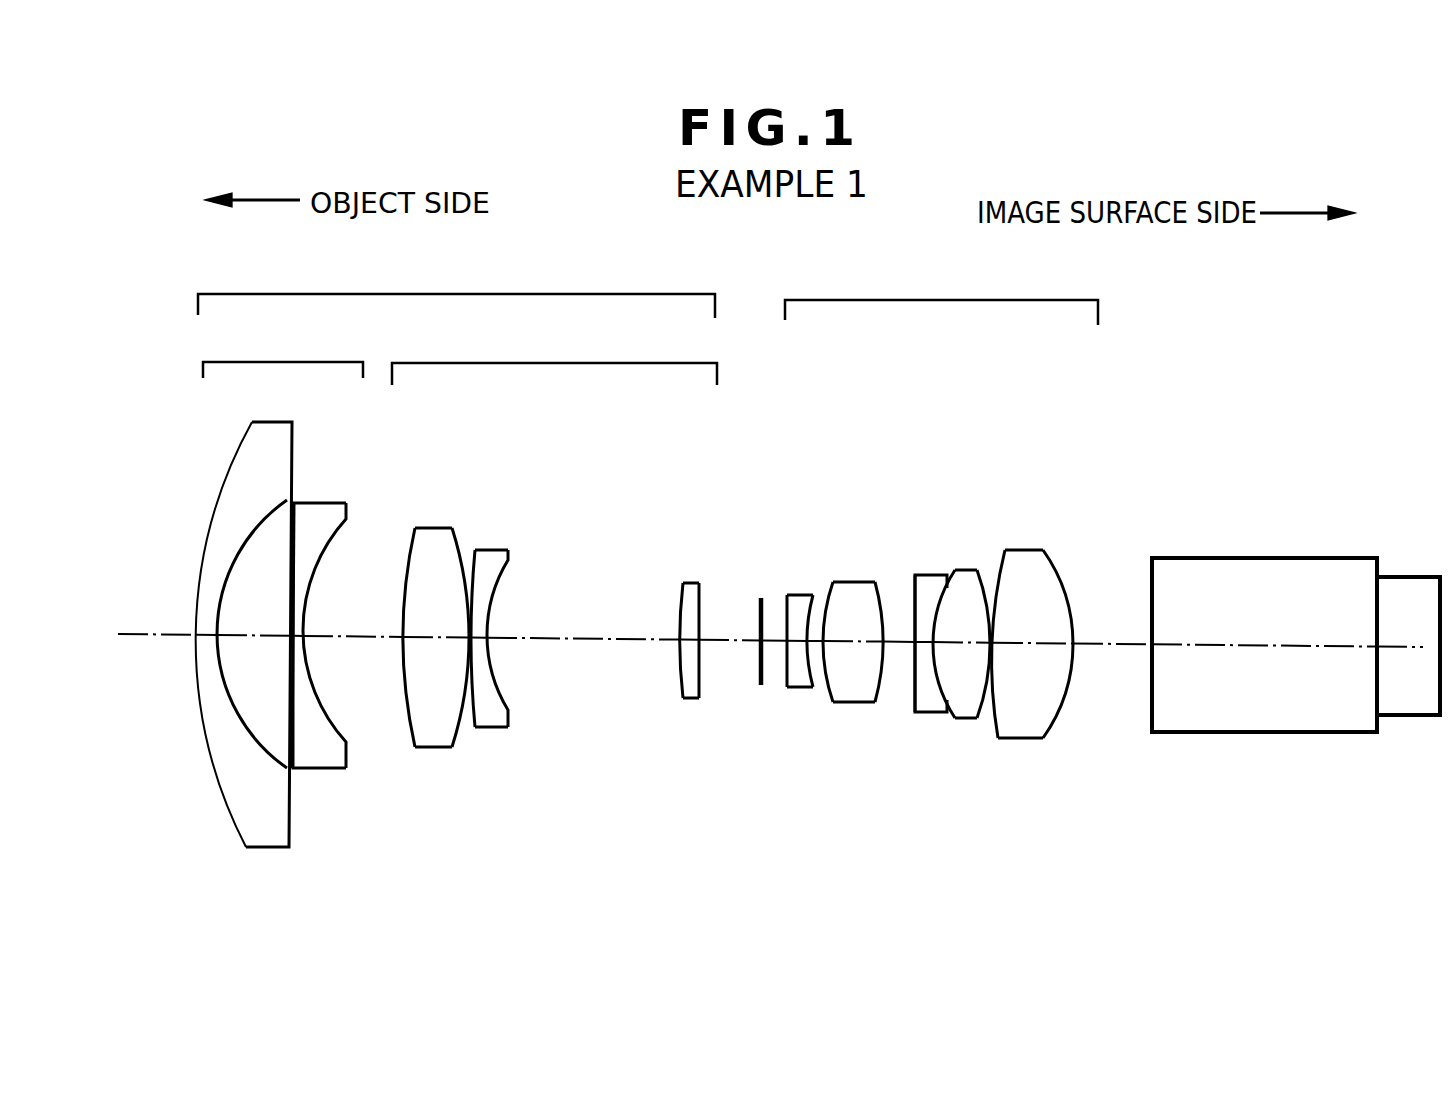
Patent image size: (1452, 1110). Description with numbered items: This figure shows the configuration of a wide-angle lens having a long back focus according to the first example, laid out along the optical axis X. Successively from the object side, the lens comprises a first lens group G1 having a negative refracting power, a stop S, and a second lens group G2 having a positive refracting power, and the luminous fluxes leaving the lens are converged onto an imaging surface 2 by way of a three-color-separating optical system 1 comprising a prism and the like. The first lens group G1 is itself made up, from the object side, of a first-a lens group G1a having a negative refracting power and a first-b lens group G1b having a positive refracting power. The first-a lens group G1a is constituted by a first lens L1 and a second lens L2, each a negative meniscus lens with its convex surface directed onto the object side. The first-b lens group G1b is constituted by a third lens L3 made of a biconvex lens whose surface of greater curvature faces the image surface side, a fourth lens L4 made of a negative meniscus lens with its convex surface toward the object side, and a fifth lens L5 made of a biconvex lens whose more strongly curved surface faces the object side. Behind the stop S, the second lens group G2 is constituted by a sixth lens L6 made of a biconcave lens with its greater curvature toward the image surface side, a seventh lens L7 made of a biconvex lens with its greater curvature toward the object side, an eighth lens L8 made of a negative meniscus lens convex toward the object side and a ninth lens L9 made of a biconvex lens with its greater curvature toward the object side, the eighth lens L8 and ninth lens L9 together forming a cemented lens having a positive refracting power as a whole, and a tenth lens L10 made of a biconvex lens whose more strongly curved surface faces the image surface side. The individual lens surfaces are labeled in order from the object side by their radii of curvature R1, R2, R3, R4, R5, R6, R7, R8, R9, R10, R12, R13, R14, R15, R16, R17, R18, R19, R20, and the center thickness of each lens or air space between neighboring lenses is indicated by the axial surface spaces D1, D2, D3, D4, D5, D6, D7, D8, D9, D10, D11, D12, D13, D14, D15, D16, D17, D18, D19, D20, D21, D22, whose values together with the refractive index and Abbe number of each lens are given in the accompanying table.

The first lens group G1 is at (456, 293).
The first-a lens group G1a is at (283, 357).
The first-b lens group G1b is at (554, 360).
The second lens group G2 is at (941, 299).
The optical axis X is at (125, 640).
The stop S is at (760, 675).
The first lens L1 is at (241, 658).
The second lens L2 is at (328, 641).
The third lens L3 is at (420, 641).
The fourth lens L4 is at (512, 631).
The fifth lens L5 is at (681, 645).
The sixth lens L6 is at (792, 651).
The seventh lens L7 is at (860, 645).
The eighth lens L8 is at (921, 651).
The ninth lens L9 is at (971, 642).
The tenth lens L10 is at (1056, 644).
The radius of curvature R1 is at (224, 481).
The radius of curvature R2 is at (253, 540).
The radius of curvature R3 is at (283, 540).
The radius of curvature R4 is at (326, 563).
The radius of curvature R5 is at (410, 553).
The radius of curvature R6 is at (460, 542).
The radius of curvature R7 is at (471, 557).
The radius of curvature R8 is at (503, 580).
The radius of curvature R9 is at (680, 610).
The radius of curvature R10 is at (700, 590).
The radius of curvature R12 is at (787, 608).
The radius of curvature R13 is at (810, 610).
The radius of curvature R14 is at (827, 600).
The radius of curvature R15 is at (882, 610).
The radius of curvature R16 is at (912, 580).
The radius of curvature R17 is at (945, 580).
The radius of curvature R18 is at (987, 583).
The radius of curvature R19 is at (1002, 567).
The radius of curvature R20 is at (1053, 562).
The axial surface space D1 is at (204, 618).
The axial surface space D2 is at (254, 634).
The axial surface space D3 is at (301, 618).
The axial surface space D4 is at (326, 639).
The axial surface space D5 is at (417, 637).
The axial surface space D6 is at (477, 627).
The axial surface space D7 is at (482, 640).
The axial surface space D8 is at (577, 637).
The axial surface space D9 is at (689, 642).
The axial surface space D10 is at (728, 645).
The axial surface space D11 is at (768, 635).
The axial surface space D12 is at (793, 650).
The axial surface space D13 is at (820, 633).
The axial surface space D14 is at (853, 643).
The axial surface space D15 is at (893, 647).
The axial surface space D16 is at (923, 640).
The axial surface space D17 is at (958, 643).
The axial surface space D18 is at (997, 637).
The axial surface space D19 is at (1020, 643).
The axial surface space D20 is at (1107, 643).
The axial surface space D21 is at (1273, 647).
The axial surface space D22 is at (1393, 647).
The three-color-separating optical system 1 is at (1278, 748).
The imaging surface 2 is at (1438, 687).